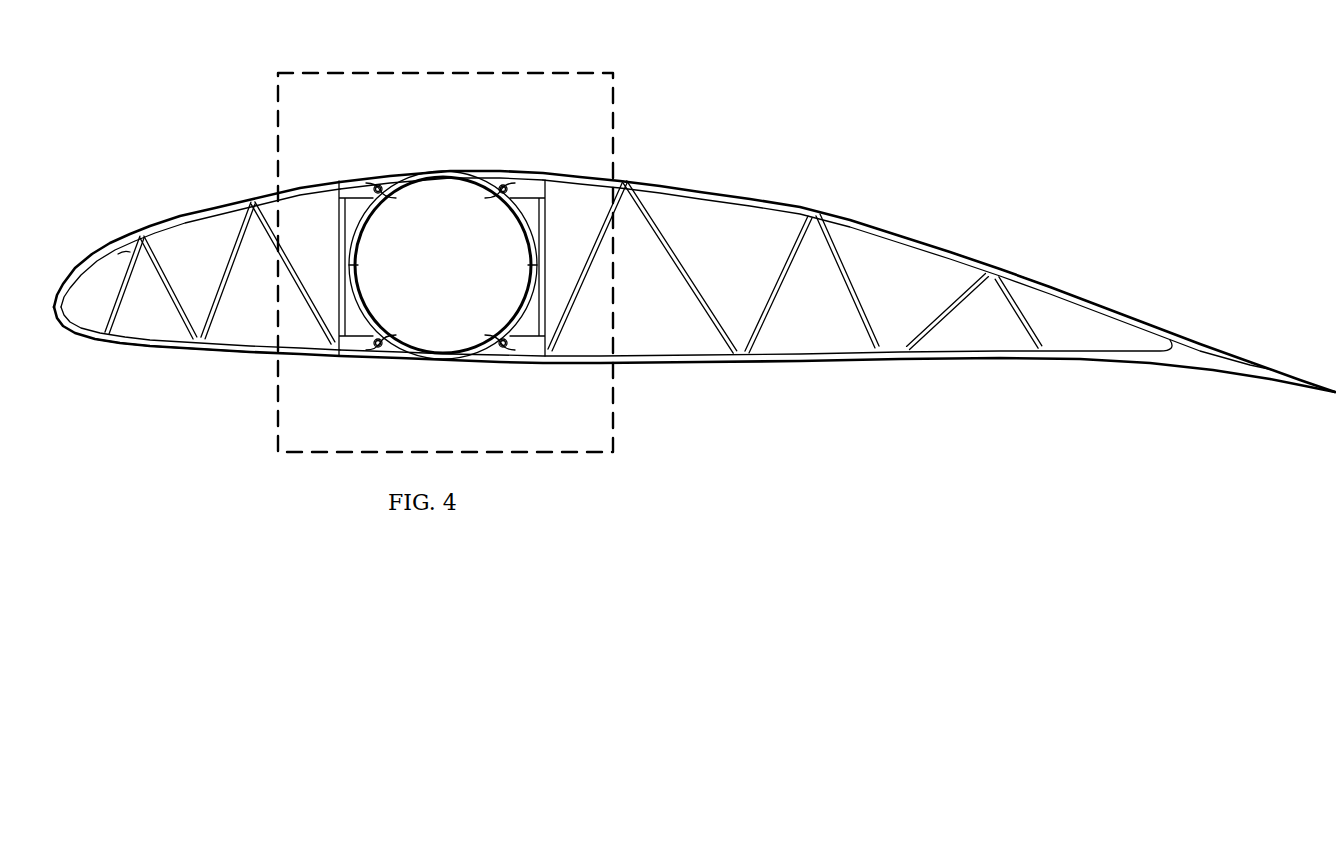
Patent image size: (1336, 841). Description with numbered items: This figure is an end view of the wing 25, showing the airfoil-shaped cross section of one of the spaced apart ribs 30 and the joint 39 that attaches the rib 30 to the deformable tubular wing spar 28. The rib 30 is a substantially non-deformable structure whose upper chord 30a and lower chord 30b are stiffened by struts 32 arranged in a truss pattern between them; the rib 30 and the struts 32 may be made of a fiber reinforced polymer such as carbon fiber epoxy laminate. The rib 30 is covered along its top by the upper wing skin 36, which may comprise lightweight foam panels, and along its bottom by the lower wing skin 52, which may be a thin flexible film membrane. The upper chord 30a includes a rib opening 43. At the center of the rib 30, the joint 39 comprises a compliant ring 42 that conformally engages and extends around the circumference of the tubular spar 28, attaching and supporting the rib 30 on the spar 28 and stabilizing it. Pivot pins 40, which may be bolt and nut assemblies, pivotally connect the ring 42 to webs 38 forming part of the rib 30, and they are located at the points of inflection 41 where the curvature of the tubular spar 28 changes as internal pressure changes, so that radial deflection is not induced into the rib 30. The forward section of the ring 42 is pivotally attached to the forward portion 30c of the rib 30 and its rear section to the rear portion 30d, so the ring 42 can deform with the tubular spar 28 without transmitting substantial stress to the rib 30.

The wing 25 is at (206, 76).
The tubular wing spar 28 is at (410, 340).
The rib 30 is at (728, 190).
The upper chord 30a is at (186, 208).
The lower chord 30b is at (235, 354).
The forward portion of the rib 30c is at (254, 167).
The rear portion of the rib 30d is at (672, 167).
The struts 32 is at (783, 290).
The upper wing skin 36 is at (912, 240).
The webs 38 is at (350, 177).
The joint 39 is at (319, 90).
The pivot pins 40 is at (378, 183).
The points of inflection 41 is at (385, 173).
The ring 42 is at (378, 240).
The rib opening 43 is at (438, 146).
The lower wing skin 52 is at (176, 353).